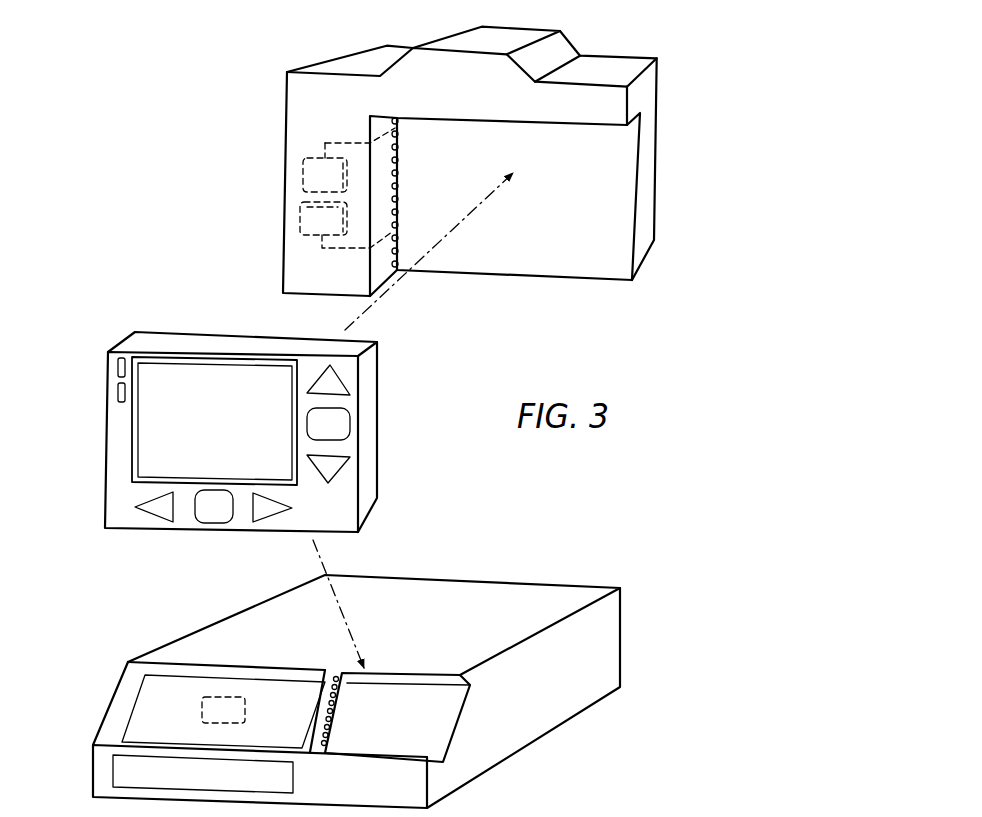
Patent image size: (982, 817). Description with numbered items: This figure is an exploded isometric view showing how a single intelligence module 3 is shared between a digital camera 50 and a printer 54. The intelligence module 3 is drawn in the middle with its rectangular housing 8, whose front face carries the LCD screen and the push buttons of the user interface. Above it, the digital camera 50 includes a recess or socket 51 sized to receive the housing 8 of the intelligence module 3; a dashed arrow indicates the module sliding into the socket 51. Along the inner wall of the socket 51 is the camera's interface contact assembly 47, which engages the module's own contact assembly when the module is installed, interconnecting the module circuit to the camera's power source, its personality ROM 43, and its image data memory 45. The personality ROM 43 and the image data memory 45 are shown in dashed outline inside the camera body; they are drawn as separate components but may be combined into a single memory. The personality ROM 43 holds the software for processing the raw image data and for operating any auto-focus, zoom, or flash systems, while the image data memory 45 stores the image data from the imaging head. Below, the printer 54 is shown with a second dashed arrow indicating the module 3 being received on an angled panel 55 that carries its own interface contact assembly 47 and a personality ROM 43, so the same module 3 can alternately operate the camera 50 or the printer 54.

The intelligence module 3 is at (204, 407).
The rectangular housing 8 is at (200, 337).
The personality ROM 43 is at (300, 177).
The image data memory 45 is at (300, 222).
The interface contact assembly 47 is at (398, 182).
The digital camera 50 is at (404, 379).
The recess or socket 51 is at (573, 221).
The printer 54 is at (356, 691).
The connector panel 55 is at (447, 720).